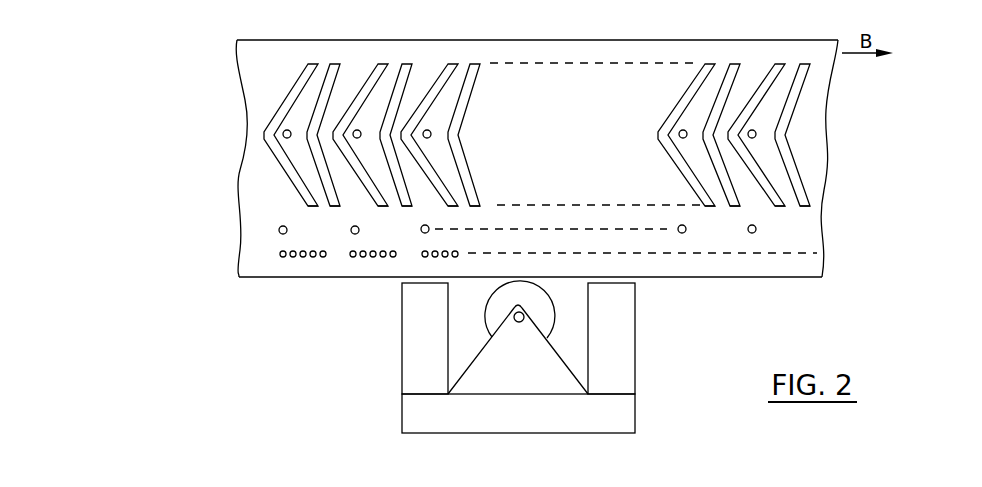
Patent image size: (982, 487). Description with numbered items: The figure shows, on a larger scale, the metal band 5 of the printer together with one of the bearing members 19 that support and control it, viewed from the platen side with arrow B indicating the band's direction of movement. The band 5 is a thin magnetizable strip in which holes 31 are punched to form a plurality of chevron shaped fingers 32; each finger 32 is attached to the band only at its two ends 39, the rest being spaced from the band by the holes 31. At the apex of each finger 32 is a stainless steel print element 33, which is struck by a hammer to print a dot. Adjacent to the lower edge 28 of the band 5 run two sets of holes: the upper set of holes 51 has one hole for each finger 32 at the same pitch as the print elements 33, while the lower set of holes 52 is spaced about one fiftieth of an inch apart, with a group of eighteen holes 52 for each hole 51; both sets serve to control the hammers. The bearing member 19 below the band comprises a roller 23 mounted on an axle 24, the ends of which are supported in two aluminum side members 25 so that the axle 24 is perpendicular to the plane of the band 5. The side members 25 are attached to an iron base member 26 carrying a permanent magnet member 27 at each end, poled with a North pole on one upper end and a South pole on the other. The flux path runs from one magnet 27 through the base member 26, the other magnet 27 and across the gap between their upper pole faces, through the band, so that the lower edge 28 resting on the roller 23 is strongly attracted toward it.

The band 5 is at (569, 47).
The bearing member 19 is at (537, 357).
The roller 23 is at (538, 304).
The axle 24 is at (521, 322).
The side members 25 is at (480, 373).
The base member 26 is at (626, 423).
The permanent magnet members 27 is at (406, 320).
The lower edge 28 is at (358, 278).
The holes 31 is at (350, 106).
The chevron shaped fingers 32 is at (372, 105).
The print element 33 is at (283, 134).
The ends 39 is at (466, 63).
The holes 51 is at (351, 230).
The holes 52 is at (283, 258).